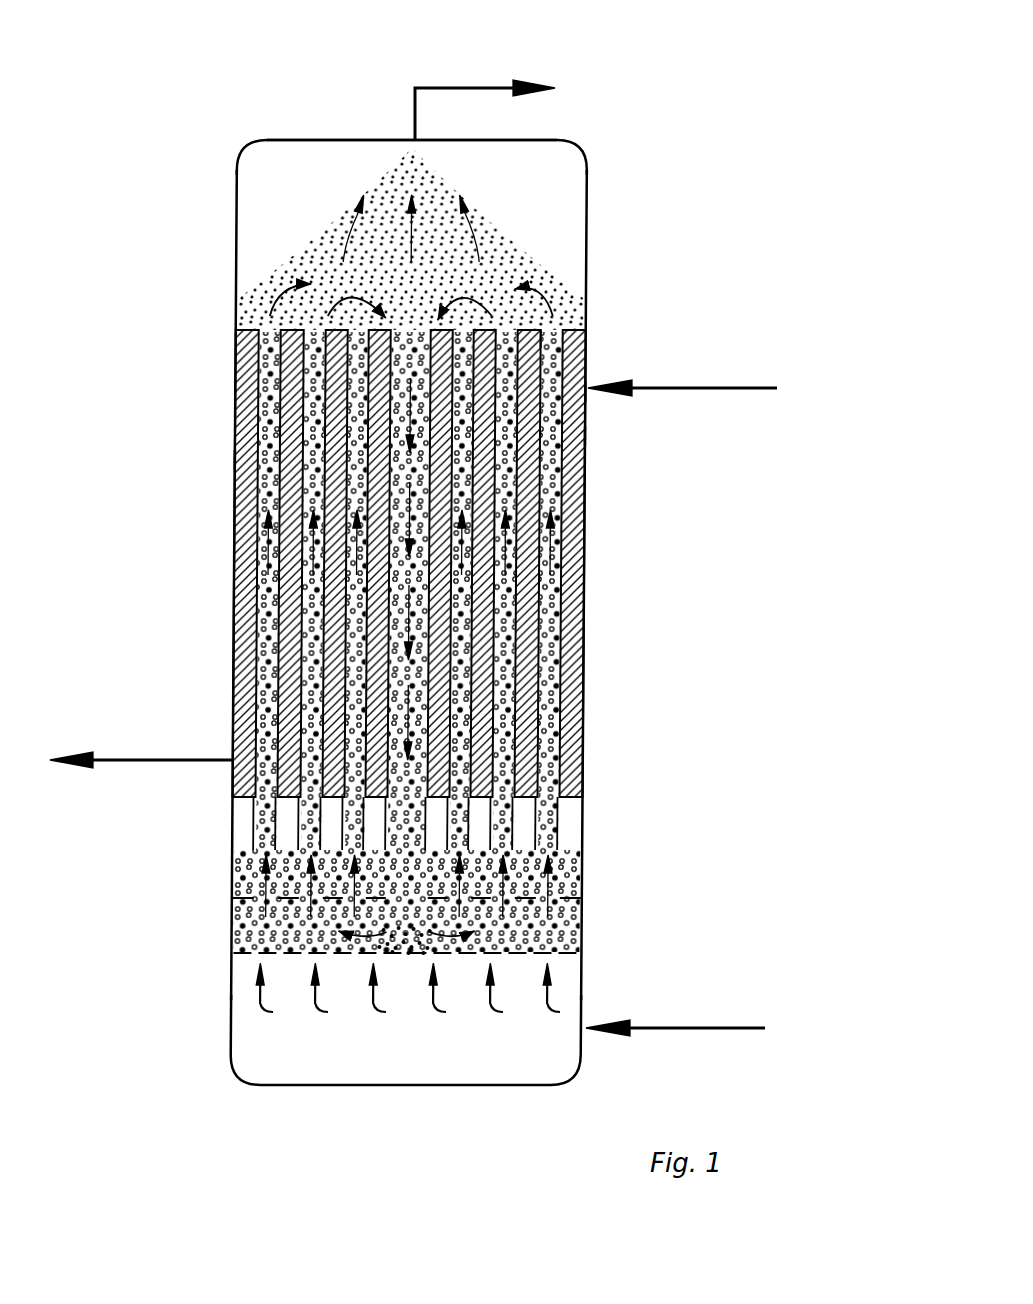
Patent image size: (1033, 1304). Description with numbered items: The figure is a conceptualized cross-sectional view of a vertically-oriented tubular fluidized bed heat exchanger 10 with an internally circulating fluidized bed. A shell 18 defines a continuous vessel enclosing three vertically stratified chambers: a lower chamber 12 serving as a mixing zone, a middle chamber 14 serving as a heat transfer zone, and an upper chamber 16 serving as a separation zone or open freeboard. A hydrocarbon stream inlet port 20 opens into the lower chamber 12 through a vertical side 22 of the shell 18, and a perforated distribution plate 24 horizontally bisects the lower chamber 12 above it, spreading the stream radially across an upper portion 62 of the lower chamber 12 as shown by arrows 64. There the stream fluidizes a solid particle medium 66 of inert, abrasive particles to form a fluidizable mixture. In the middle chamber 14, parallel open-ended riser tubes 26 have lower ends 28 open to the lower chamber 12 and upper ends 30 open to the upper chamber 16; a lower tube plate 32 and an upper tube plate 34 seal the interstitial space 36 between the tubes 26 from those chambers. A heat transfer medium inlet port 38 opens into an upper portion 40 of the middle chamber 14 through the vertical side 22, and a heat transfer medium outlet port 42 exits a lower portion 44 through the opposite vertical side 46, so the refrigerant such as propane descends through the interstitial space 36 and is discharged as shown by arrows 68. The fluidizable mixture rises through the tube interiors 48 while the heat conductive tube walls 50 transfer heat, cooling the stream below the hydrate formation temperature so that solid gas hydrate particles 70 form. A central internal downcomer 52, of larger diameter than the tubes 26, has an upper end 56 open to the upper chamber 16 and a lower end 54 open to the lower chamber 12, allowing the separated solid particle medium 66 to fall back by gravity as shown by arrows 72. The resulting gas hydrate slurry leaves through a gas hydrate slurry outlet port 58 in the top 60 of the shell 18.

The fluidized bed heat exchanger 10 is at (338, 506).
The lower chamber 12 is at (358, 1041).
The middle chamber 14 is at (338, 623).
The upper chamber 16 is at (360, 239).
The shell 18 is at (401, 128).
The hydrocarbon stream inlet port 20 is at (675, 1050).
The vertical side 22 is at (600, 563).
The perforated distribution plate 24 is at (438, 982).
The riser tubes 26 is at (607, 591).
The lower ends 28 is at (457, 848).
The upper ends 30 is at (608, 325).
The lower tube plate 32 is at (607, 823).
The upper tube plate 34 is at (597, 347).
The interstitial space 36 is at (619, 563).
The heat transfer medium inlet port 38 is at (632, 416).
The upper portion of the middle chamber 40 is at (635, 455).
The heat transfer medium outlet port 42 is at (141, 736).
The lower portion of the middle chamber 44 is at (189, 807).
The opposite vertical side 46 is at (181, 479).
The tube interiors 48 is at (205, 562).
The tube walls 50 is at (191, 563).
The internal downcomer 52 is at (536, 591).
The lower end of the internal downcomer 54 is at (507, 910).
The upper end of the internal downcomer 56 is at (466, 286).
The gas hydrate slurry outlet port 58 is at (480, 80).
The top of the shell 60 is at (412, 94).
The upper portion of the lower chamber 62 is at (357, 903).
The arrows 64 is at (350, 992).
The solid particle medium 66 is at (393, 927).
The arrows 68 is at (703, 410).
The solid gas hydrate particles 70 is at (492, 227).
The arrows 72 is at (546, 569).